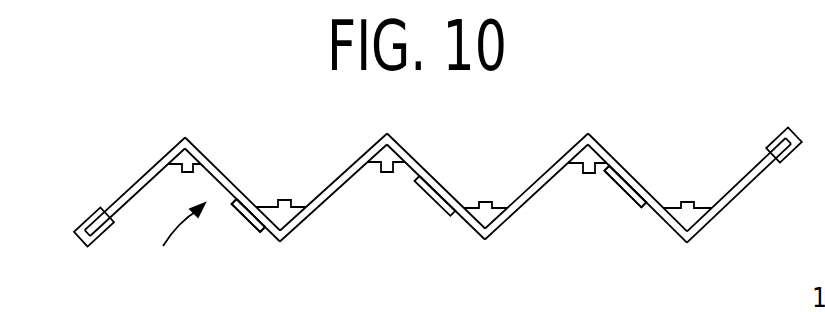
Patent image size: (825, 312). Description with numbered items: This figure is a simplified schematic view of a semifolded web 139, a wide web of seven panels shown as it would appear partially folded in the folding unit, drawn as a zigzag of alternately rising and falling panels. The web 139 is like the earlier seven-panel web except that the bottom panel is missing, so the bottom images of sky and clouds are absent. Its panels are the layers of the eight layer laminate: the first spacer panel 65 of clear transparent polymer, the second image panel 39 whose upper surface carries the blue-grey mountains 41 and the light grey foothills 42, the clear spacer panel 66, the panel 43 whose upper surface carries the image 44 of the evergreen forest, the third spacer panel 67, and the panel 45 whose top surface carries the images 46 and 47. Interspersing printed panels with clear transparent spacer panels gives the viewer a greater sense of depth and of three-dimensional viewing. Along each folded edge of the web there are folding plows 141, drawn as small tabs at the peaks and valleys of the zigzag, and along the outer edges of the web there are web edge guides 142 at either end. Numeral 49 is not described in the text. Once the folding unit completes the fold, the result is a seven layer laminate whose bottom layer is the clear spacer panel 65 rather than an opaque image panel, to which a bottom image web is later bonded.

The semifolded web 139 is at (163, 235).
The folding plows 141 is at (184, 175).
The web edge guides 142 is at (81, 218).
The strip segment 49 is at (143, 177).
The panel 45 is at (220, 168).
The third spacer panel 67 is at (333, 182).
The panel 43 is at (430, 177).
The spacer panel 66 is at (545, 173).
The second image panel 39 is at (631, 175).
The first spacer panel 65 is at (718, 218).
The image 47 is at (246, 213).
The image 46 is at (264, 225).
The image of the evergreen forest 44 is at (430, 198).
The blue-grey mountains 41 is at (608, 182).
The light grey foothills 42 is at (626, 200).